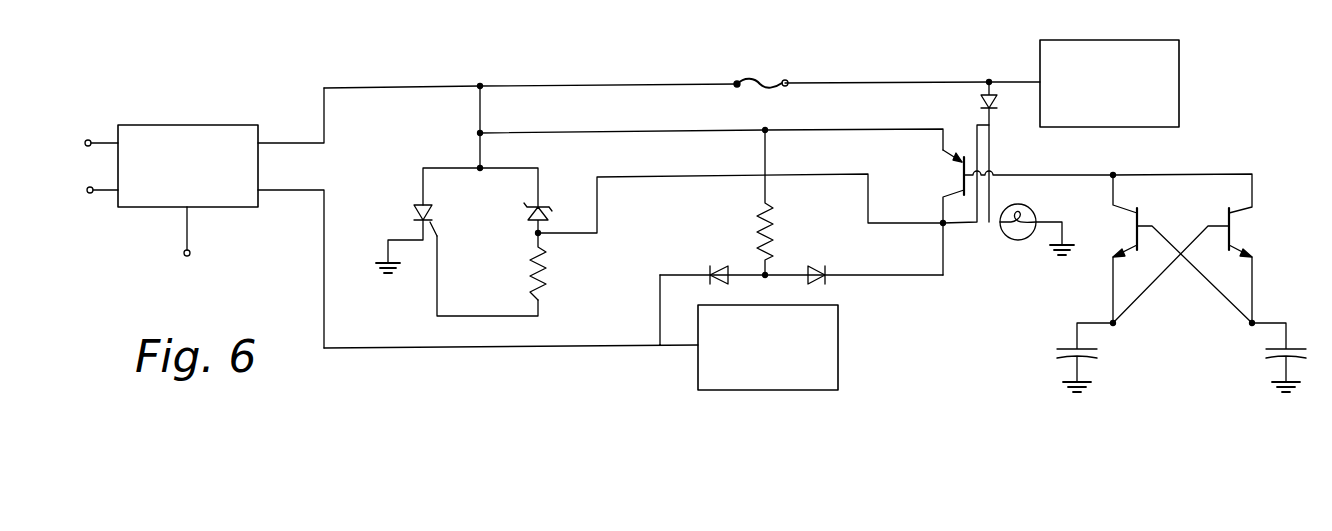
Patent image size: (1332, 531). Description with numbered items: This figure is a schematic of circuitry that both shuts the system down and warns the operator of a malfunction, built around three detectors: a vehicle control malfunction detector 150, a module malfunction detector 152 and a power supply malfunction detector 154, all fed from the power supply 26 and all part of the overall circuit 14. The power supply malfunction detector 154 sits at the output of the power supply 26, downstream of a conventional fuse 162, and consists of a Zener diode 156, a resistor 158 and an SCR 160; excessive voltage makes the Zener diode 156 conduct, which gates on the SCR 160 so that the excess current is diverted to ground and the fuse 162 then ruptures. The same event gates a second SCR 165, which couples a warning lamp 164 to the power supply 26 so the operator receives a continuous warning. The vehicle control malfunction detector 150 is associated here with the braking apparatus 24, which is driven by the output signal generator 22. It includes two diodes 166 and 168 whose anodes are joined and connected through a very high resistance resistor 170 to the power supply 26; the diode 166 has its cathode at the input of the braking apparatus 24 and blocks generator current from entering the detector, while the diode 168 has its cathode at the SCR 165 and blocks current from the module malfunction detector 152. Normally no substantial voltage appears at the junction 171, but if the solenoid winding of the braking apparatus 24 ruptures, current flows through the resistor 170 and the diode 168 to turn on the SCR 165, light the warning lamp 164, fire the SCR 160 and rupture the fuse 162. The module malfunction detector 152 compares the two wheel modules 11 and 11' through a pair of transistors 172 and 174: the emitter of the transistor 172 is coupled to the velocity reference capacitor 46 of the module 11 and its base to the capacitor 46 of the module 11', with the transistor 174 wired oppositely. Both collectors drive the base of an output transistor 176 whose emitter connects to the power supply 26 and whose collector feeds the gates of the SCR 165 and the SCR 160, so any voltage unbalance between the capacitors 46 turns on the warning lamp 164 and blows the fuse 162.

The module 11 is at (604, 210).
The module 11' is at (1313, 299).
The circuit 14 is at (662, 9).
The output signal generator 22 is at (135, 212).
The braking apparatus 24 is at (838, 338).
The power supply 26 is at (1122, 38).
The velocity reference capacitor 46 is at (1085, 360).
The vehicle control malfunction detector 150 is at (745, 268).
The module malfunction detector 152 is at (1232, 168).
The power supply malfunction detector 154 is at (455, 166).
The Zener diode 156 is at (546, 206).
The resistor 158 is at (546, 266).
The SCR 160 is at (433, 216).
The fuse 162 is at (763, 83).
The warning lamp 164 is at (1030, 210).
The SCR 165 is at (996, 104).
The diode 166 is at (718, 267).
The diode 168 is at (826, 284).
The resistor 170 is at (773, 226).
The junction 171 is at (770, 273).
The transistor 172 is at (1122, 210).
The transistor 174 is at (1242, 238).
The output transistor 176 is at (955, 160).